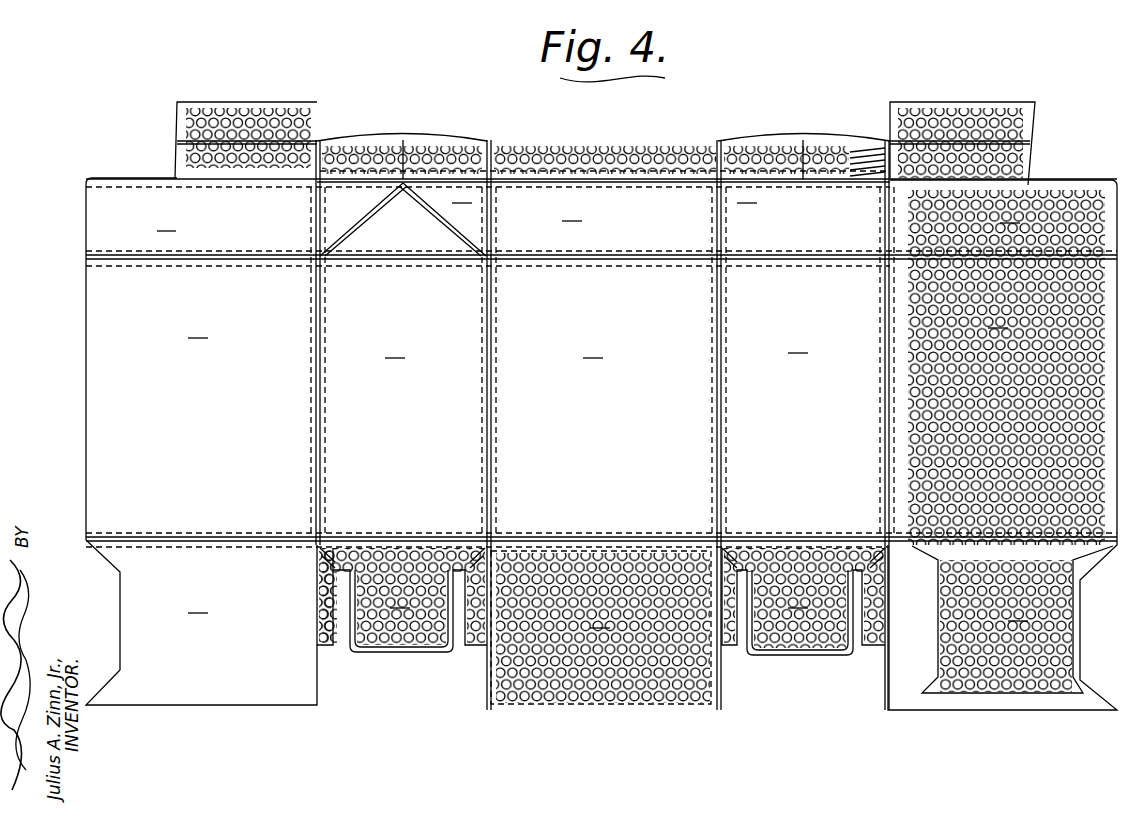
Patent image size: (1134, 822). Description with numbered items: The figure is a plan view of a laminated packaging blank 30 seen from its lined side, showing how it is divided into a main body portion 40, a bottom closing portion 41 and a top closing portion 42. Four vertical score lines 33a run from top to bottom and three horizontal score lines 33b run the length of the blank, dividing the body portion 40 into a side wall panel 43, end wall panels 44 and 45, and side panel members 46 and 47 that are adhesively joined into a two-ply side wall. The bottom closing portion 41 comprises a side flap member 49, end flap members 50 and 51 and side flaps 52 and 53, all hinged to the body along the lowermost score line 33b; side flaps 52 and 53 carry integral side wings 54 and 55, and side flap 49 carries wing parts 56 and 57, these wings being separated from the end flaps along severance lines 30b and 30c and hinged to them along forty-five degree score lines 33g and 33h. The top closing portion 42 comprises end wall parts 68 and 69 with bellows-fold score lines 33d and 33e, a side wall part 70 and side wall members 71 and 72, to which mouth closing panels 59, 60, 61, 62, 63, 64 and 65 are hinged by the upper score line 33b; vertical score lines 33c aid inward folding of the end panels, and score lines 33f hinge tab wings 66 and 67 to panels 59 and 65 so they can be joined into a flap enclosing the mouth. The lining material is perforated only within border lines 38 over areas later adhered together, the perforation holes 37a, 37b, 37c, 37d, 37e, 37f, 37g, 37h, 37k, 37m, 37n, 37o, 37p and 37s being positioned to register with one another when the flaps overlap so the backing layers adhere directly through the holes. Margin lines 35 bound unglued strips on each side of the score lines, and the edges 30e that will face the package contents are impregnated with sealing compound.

The blank 30 is at (118, 423).
The severance line 30b is at (352, 648).
The severance line 30c is at (750, 648).
The edge 30e is at (177, 150).
The score line 33a is at (321, 338).
The score line 33b is at (546, 547).
The score line 33c is at (398, 150).
The score line 33d is at (362, 222).
The score line 33e is at (449, 222).
The score line 33f is at (322, 140).
The score line 33g is at (322, 546).
The score line 33h is at (482, 546).
The margin line 35 is at (321, 398).
The perforation holes 37a is at (872, 640).
The perforation holes 37b is at (845, 556).
The perforation holes 37c is at (753, 648).
The perforation holes 37d is at (325, 638).
The perforation holes 37e is at (440, 556).
The perforation holes 37f is at (470, 645).
The perforation holes 37g is at (882, 164).
The perforation holes 37h is at (872, 160).
The perforation holes 37k is at (780, 160).
The perforation holes 37m is at (695, 160).
The perforation holes 37n is at (548, 160).
The perforation holes 37o is at (480, 160).
The perforation holes 37p is at (386, 160).
The perforation holes 37s is at (300, 165).
The border line 38 is at (600, 160).
The main body portion 40 is at (72, 330).
The bottom closing portion 41 is at (110, 583).
The top closing portion 42 is at (72, 213).
The side wall panel 43 is at (594, 349).
The end wall panel 44 is at (396, 349).
The end wall panel 45 is at (799, 344).
The side panel member 46 is at (199, 329).
The side panel member 47 is at (999, 319).
The side flap member 49 is at (601, 627).
The end flap member 50 is at (403, 600).
The end flap member 51 is at (803, 601).
The side flap member 52 is at (199, 604).
The side flap member 53 is at (1012, 619).
The side wing 54 is at (335, 648).
The side wing 55 is at (872, 648).
The wing part 56 is at (487, 655).
The wing part 57 is at (726, 648).
The mouth closing panel 59 is at (178, 168).
The mouth closing panel 60 is at (403, 140).
The mouth closing panel 61 is at (487, 140).
The mouth closing panel 62 is at (568, 160).
The mouth closing panel 63 is at (718, 140).
The mouth closing panel 64 is at (803, 140).
The mouth closing panel 65 is at (1025, 160).
The tab wing 66 is at (242, 102).
The tab wing 67 is at (965, 102).
The end wall part 68 is at (403, 219).
The end wall part 69 is at (748, 194).
The side wall part 70 is at (573, 212).
The side wall member 71 is at (168, 222).
The side wall member 72 is at (1011, 214).